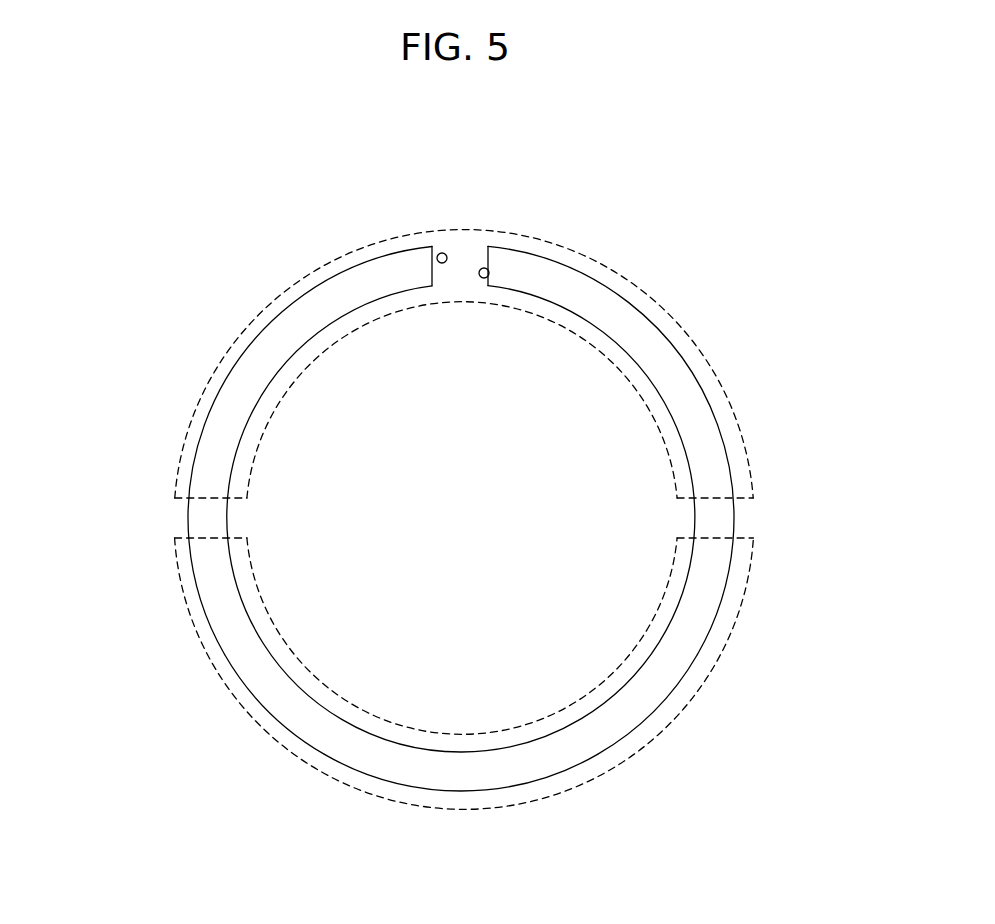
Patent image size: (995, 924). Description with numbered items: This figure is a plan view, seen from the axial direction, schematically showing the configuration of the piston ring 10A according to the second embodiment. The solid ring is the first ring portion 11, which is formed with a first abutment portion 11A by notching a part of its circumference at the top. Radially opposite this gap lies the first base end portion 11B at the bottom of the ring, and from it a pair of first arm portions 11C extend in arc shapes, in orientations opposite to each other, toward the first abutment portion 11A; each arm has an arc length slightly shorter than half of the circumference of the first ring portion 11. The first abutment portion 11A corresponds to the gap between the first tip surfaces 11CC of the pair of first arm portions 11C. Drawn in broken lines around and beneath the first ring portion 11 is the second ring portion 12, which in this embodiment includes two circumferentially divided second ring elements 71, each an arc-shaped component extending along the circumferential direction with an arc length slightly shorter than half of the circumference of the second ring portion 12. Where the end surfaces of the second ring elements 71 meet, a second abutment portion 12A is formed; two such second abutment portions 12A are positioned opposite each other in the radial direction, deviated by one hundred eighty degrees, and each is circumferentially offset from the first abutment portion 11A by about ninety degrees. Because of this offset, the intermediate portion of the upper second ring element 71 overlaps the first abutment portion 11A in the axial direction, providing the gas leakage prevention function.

The piston ring 10A is at (720, 256).
The first ring portion 11 is at (718, 420).
The first abutment portion 11A is at (462, 269).
The first base end portion 11B is at (453, 790).
The first arm portions 11C is at (193, 582).
The first tip surfaces 11CC is at (437, 253).
The second ring portion 12 is at (694, 333).
The second ring elements 71 is at (510, 520).
The second abutment portion 12A is at (176, 517).